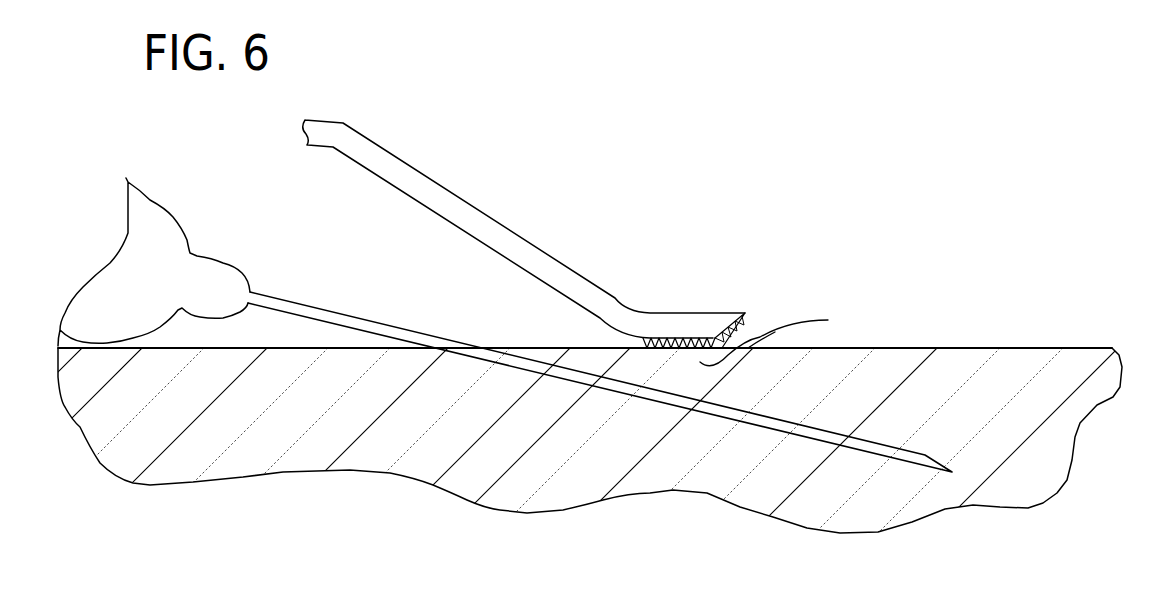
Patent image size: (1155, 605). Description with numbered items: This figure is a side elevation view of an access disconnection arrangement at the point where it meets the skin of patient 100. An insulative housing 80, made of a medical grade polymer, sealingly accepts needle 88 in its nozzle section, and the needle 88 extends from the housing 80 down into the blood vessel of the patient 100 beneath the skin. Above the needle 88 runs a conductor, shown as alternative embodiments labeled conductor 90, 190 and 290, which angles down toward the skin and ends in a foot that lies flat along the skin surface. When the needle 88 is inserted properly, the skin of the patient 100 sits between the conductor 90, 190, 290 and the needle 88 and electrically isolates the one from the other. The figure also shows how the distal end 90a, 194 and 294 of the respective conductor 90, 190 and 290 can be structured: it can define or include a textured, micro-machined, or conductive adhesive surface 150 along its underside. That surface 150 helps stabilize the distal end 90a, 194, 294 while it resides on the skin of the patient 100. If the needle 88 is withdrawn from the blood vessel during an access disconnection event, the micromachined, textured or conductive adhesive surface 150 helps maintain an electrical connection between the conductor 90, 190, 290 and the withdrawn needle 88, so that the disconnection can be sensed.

The insulative housing 80 is at (163, 290).
The needle 88 is at (890, 450).
The conductor 90 is at (566, 234).
The conductor 190 is at (566, 234).
The conductor 290 is at (566, 234).
The distal end of conductor 90a is at (736, 294).
The distal end of conductor 194 is at (736, 294).
The distal end of conductor 294 is at (690, 313).
The patient 100 is at (347, 427).
The textured, micro-machined, or conductive adhesive surface 150 is at (784, 337).